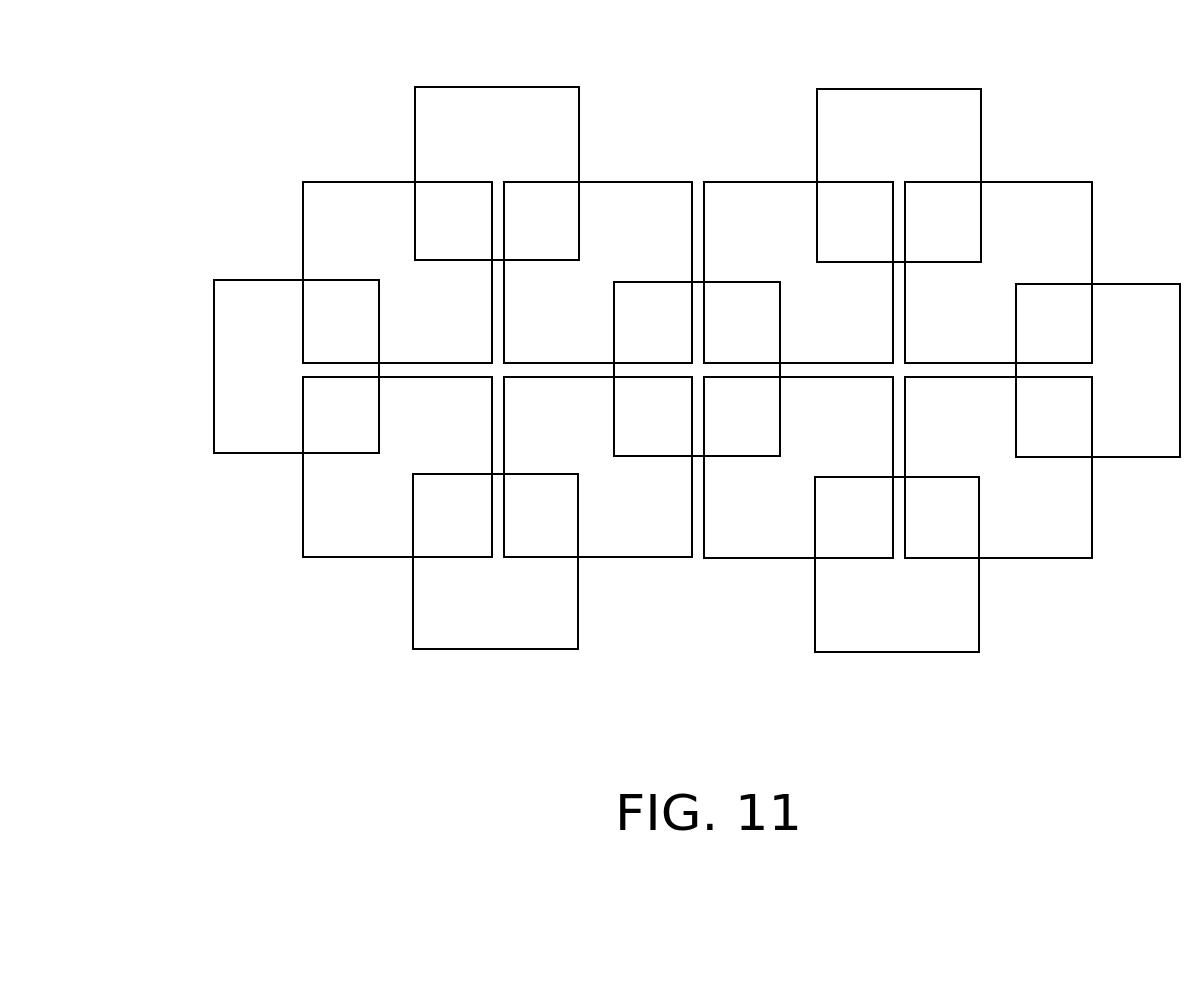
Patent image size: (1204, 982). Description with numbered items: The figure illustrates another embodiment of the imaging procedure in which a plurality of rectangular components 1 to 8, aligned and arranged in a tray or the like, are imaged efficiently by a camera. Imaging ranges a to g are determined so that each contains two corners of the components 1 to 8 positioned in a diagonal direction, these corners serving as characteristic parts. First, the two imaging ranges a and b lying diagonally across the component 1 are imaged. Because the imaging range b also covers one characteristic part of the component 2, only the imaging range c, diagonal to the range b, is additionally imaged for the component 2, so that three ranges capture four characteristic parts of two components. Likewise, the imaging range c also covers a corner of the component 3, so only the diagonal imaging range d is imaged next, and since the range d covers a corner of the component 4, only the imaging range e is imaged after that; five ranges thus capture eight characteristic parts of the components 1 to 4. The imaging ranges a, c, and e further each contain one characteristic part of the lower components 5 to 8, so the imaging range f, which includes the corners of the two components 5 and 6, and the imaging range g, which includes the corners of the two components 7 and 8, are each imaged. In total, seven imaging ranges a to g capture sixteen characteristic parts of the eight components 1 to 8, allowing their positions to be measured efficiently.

The component 1 is at (330, 180).
The component 2 is at (643, 182).
The component 3 is at (752, 182).
The component 4 is at (1066, 183).
The component 5 is at (328, 557).
The component 6 is at (643, 557).
The component 7 is at (753, 558).
The component 8 is at (1063, 558).
The imaging range a is at (296, 366).
The imaging range b is at (497, 173).
The imaging range c is at (697, 369).
The imaging range d is at (899, 175).
The imaging range e is at (1098, 370).
The imaging range f is at (495, 561).
The imaging range g is at (897, 564).